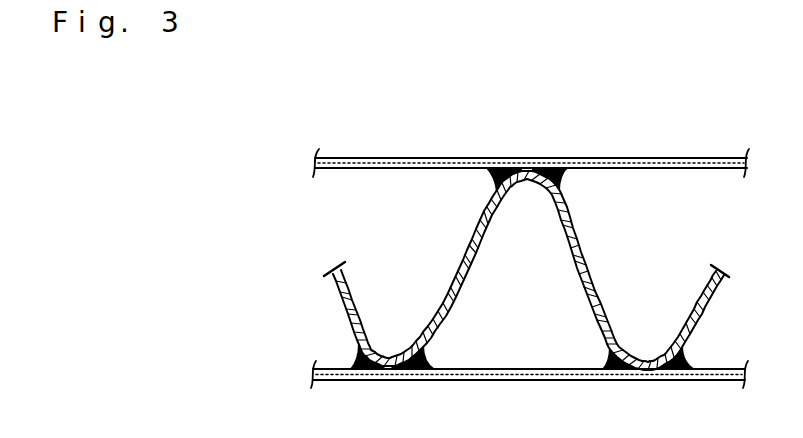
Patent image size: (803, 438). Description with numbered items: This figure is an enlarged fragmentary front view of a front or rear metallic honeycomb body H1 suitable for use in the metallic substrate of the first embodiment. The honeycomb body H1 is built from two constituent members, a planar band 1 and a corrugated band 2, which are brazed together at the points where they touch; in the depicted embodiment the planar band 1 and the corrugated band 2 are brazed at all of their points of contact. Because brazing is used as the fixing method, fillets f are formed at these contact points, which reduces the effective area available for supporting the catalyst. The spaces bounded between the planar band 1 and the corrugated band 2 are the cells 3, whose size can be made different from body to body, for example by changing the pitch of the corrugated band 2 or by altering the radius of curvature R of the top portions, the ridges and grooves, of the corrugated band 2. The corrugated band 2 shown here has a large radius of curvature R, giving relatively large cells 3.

The planar band 1 is at (655, 160).
The corrugated band 2 is at (590, 244).
The cells 3 is at (540, 317).
The fillets f is at (502, 160).
The radius of curvature R is at (564, 217).
The front metallic honeycomb body H1 is at (446, 129).